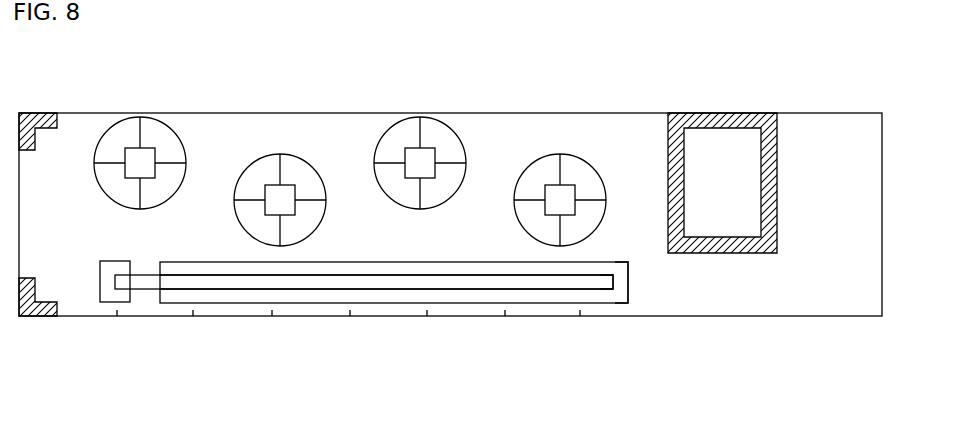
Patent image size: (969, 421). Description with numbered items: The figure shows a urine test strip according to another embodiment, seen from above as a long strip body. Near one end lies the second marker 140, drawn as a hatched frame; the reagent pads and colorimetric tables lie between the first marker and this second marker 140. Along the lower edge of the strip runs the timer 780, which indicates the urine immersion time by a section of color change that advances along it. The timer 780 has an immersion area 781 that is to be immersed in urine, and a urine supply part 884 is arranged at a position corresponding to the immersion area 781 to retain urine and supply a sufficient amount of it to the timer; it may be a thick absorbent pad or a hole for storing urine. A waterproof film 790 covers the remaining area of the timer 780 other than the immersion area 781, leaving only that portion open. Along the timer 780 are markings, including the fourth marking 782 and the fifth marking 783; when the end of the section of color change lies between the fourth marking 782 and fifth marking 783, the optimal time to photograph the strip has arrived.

The second marker 140 is at (722, 113).
The urine supply part 884 is at (100, 282).
The immersion area 781 is at (143, 292).
The fourth marking 782 is at (349, 311).
The fifth marking 783 is at (426, 311).
The timer 780 is at (595, 280).
The waterproof film 790 is at (625, 303).